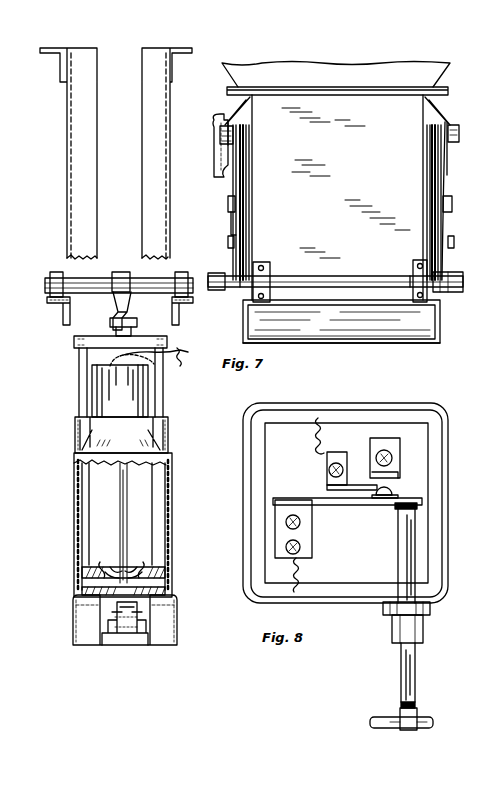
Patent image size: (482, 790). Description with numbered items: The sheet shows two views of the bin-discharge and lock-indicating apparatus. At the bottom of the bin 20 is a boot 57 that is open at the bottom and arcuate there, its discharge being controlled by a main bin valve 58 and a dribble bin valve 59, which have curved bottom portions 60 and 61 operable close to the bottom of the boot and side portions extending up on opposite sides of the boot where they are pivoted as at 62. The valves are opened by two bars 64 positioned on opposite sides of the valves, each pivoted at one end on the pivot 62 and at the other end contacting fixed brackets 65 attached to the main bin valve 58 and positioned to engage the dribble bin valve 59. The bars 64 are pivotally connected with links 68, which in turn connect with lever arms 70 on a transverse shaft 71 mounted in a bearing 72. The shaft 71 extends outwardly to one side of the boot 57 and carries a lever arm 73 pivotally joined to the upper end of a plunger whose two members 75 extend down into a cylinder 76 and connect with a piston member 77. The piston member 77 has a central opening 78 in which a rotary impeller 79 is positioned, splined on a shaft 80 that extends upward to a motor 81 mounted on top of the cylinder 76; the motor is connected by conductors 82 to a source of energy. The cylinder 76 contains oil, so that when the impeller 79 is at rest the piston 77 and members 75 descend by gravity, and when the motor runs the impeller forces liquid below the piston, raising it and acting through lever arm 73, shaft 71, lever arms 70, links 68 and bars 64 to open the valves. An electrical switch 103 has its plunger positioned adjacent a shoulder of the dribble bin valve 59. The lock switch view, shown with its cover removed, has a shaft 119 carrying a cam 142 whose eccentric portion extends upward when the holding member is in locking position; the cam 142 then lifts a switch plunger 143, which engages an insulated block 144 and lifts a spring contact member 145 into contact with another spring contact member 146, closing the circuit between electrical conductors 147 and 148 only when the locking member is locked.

In FIG. 7, the bin 20 is at (260, 66).
In FIG. 7, the boot 57 is at (381, 101).
In FIG. 7, the main bin valve 58 is at (246, 160).
In FIG. 7, the dribble bin valve 59 is at (250, 194).
In FIG. 7, the curved bottom portion 60 is at (382, 319).
In FIG. 7, the curved bottom portion 61 is at (398, 346).
In FIG. 7, the pivot 62 is at (458, 142).
In FIG. 7, the bars 64 is at (233, 193).
In FIG. 7, the brackets 65 is at (229, 238).
In FIG. 7, the links 68 is at (228, 205).
In FIG. 7, the lever arms 70 is at (236, 222).
In FIG. 7, the transverse shaft 71 is at (216, 280).
In FIG. 7, the bearing 72 is at (170, 257).
In FIG. 7, the lever arm 73 is at (128, 305).
In FIG. 7, the members 75 is at (80, 388).
In FIG. 7, the cylinder 76 is at (76, 512).
In FIG. 7, the piston member 77 is at (96, 560).
In FIG. 7, the central opening 78 is at (105, 560).
In FIG. 7, the rotary impeller 79 is at (138, 560).
In FIG. 7, the shaft 80 is at (125, 507).
In FIG. 7, the motor 81 is at (123, 386).
In FIG. 7, the conductors 82 is at (158, 360).
In FIG. 7, the electrical switch 103 is at (208, 124).
In FIG. 8, the shaft 119 is at (386, 731).
In FIG. 8, the cam 142 is at (416, 715).
In FIG. 8, the switch plunger 143 is at (400, 662).
In FIG. 8, the insulated block 144 is at (396, 507).
In FIG. 8, the spring contact member 145 is at (318, 499).
In FIG. 8, the spring contact member 146 is at (392, 491).
In FIG. 8, the electrical conductor 147 is at (304, 568).
In FIG. 8, the electrical conductor 148 is at (325, 460).